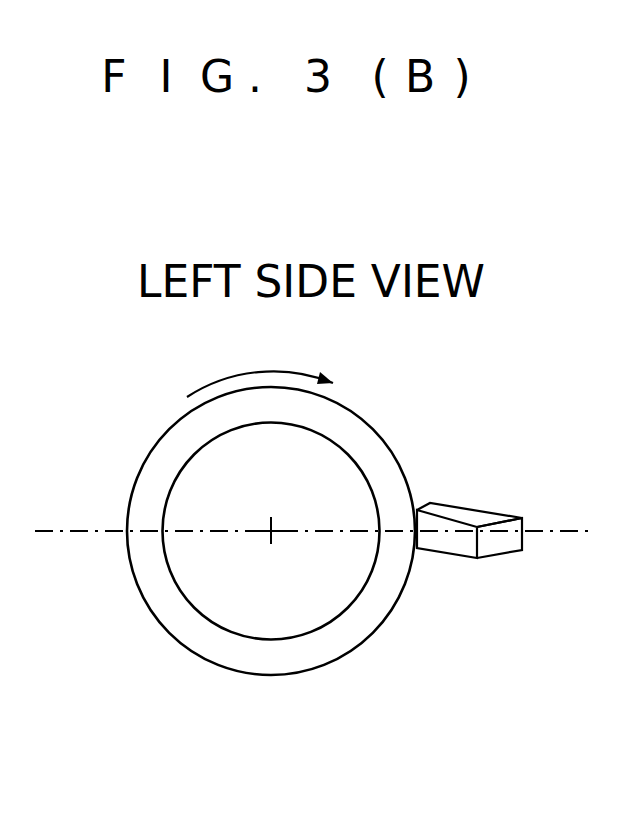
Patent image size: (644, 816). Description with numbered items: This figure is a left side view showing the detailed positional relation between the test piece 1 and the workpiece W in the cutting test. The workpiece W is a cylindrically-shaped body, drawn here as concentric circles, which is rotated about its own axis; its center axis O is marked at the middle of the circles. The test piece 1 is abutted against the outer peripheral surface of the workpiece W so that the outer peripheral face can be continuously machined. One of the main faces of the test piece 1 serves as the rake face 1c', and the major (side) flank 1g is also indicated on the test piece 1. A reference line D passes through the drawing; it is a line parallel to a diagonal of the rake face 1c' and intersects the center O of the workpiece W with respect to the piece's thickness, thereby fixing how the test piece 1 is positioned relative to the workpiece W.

The workpiece W is at (133, 468).
The center axis of workpiece O is at (286, 509).
The line parallel to a diagonal of main face D is at (333, 531).
The test piece 1 is at (494, 556).
The rake face 1c' is at (494, 487).
The major (side) flank 1g is at (436, 520).